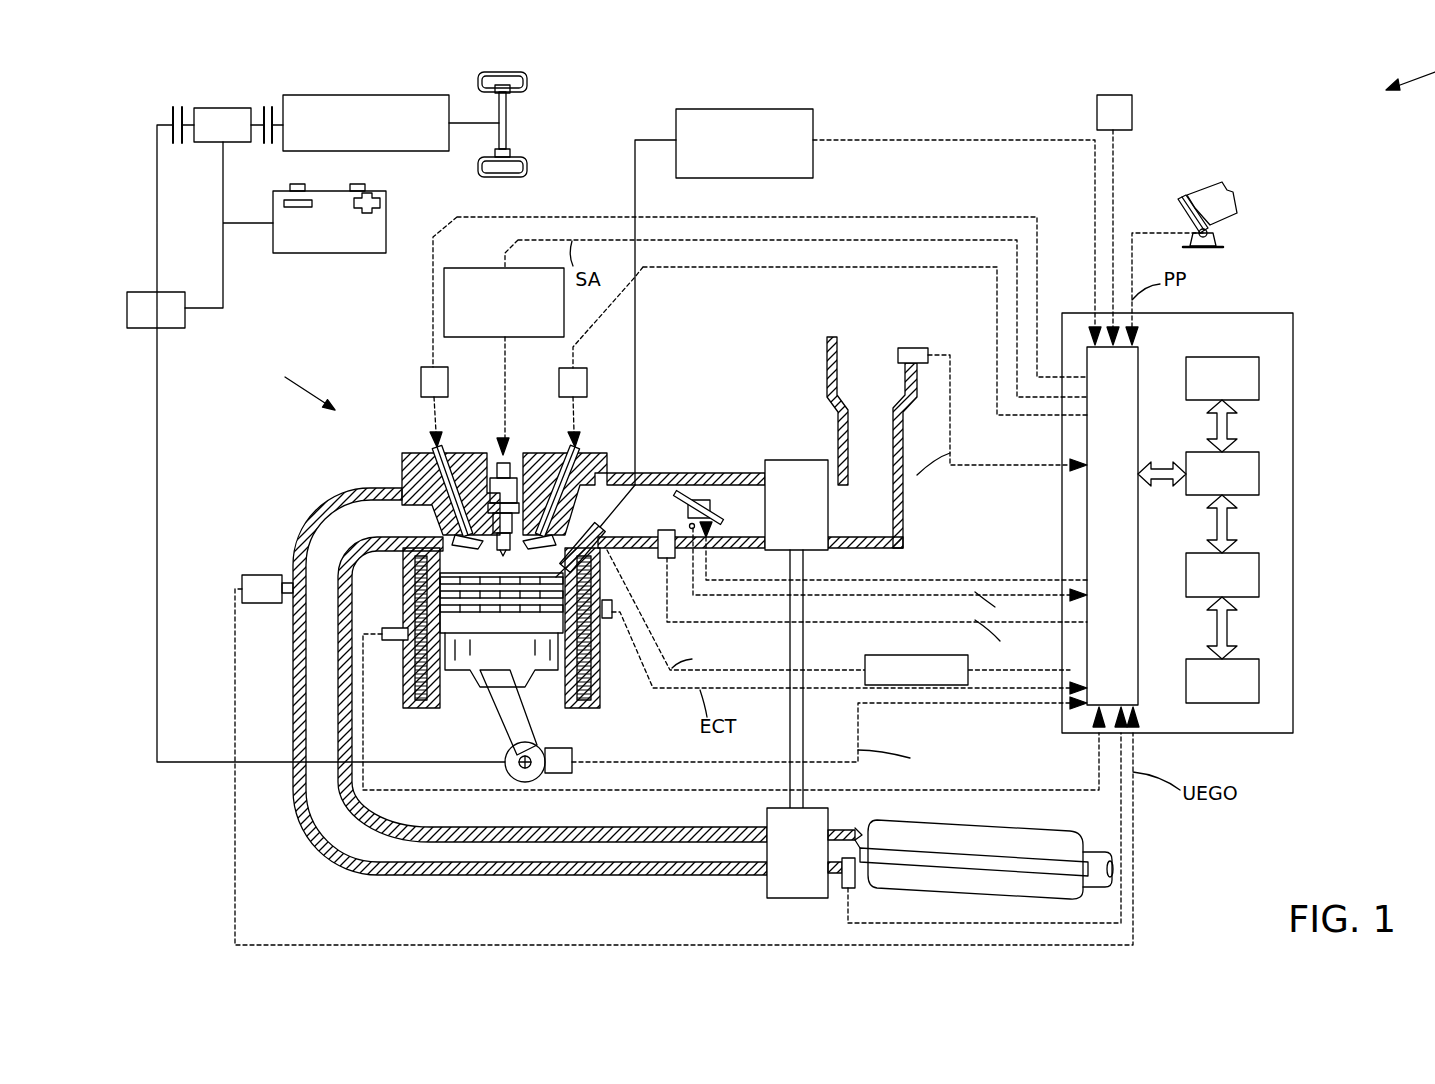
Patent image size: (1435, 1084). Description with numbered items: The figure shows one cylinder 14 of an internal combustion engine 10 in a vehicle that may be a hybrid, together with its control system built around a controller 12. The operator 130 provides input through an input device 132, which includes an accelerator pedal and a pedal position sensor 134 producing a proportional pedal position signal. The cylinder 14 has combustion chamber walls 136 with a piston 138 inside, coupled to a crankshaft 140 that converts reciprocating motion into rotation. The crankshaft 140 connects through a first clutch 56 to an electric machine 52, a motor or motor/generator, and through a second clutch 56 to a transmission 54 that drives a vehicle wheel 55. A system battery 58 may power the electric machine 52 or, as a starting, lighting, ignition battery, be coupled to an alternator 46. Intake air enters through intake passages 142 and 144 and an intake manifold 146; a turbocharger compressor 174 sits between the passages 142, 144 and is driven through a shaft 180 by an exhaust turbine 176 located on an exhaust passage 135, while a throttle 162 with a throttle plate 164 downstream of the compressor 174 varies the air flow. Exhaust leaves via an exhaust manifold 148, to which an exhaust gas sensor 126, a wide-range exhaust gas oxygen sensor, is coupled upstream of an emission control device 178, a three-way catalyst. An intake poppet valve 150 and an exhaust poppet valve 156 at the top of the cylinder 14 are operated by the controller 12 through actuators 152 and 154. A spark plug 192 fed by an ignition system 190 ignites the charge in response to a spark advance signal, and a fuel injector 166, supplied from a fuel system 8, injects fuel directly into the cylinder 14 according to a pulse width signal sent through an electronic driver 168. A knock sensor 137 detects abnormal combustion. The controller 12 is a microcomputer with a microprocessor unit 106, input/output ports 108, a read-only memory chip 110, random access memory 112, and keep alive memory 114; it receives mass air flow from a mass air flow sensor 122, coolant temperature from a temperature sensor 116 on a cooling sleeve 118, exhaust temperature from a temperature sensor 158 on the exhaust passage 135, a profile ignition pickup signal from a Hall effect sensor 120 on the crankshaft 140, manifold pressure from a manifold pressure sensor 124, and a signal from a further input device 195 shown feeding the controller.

The fuel system 8 is at (785, 109).
The internal combustion engine 10 is at (295, 386).
The controller 12 is at (1293, 318).
The cylinder 14 is at (427, 557).
The alternator 46 is at (127, 322).
The electric machine 52 is at (196, 108).
The transmission 54 is at (440, 151).
The vehicle wheel 55 is at (480, 78).
The clutch 56 is at (173, 108).
The system battery 58 is at (323, 253).
The microprocessor unit 106 is at (1259, 470).
The input/output ports 108 is at (1140, 353).
The read-only memory chip 110 is at (1259, 375).
The random access memory 112 is at (1259, 572).
The keep alive memory 114 is at (1259, 680).
The temperature sensor 116 is at (608, 622).
The cooling sleeve 118 is at (606, 625).
The Hall effect sensor 120 is at (572, 770).
The mass air flow sensor 122 is at (920, 349).
The MAP sensor 124 is at (672, 562).
The exhaust gas sensor 126 is at (242, 583).
The vehicle operator 130 is at (1240, 201).
The input device 132 is at (1180, 210).
The pedal position sensor 134 is at (1212, 235).
The exhaust passage 135 is at (672, 830).
The combustion chamber walls 136 is at (442, 702).
The knock sensor 137 is at (395, 641).
The piston 138 is at (492, 660).
The crankshaft 140 is at (505, 768).
The intake passage 142 is at (857, 384).
The intake passage 144 is at (728, 523).
The intake manifold 146 is at (640, 523).
The exhaust manifold 148 is at (357, 531).
The intake poppet valve 150 is at (548, 495).
The actuator 152 is at (559, 378).
The actuator 154 is at (421, 370).
The exhaust poppet valve 156 is at (403, 488).
The temperature sensor 158 is at (842, 882).
The throttle 162 is at (704, 497).
The throttle plate 164 is at (677, 492).
The fuel injector 166 is at (576, 547).
The electronic driver 168 is at (866, 658).
The compressor 174 is at (781, 523).
The exhaust turbine 176 is at (782, 866).
The emission control device 178 is at (1055, 830).
The shaft 180 is at (805, 718).
The ignition system 190 is at (458, 268).
The spark plug 192 is at (499, 490).
The brake pedal sensor 195 is at (1132, 100).